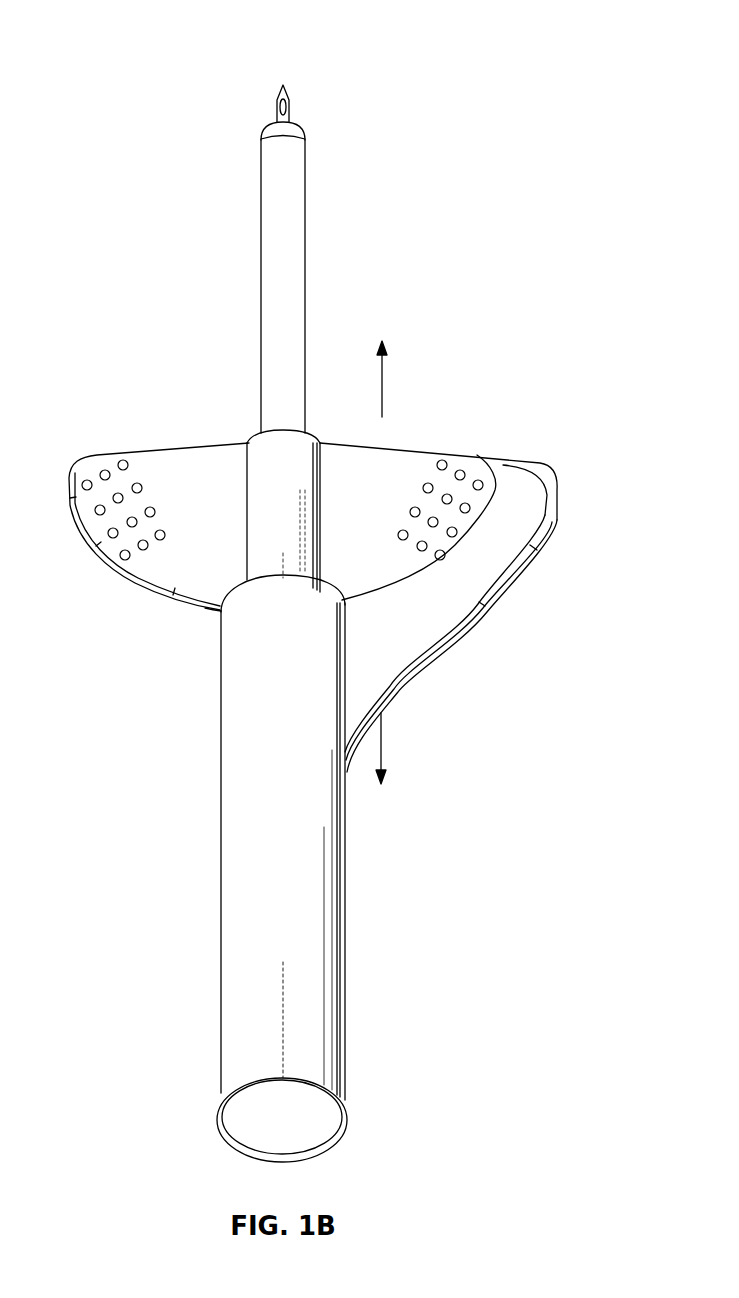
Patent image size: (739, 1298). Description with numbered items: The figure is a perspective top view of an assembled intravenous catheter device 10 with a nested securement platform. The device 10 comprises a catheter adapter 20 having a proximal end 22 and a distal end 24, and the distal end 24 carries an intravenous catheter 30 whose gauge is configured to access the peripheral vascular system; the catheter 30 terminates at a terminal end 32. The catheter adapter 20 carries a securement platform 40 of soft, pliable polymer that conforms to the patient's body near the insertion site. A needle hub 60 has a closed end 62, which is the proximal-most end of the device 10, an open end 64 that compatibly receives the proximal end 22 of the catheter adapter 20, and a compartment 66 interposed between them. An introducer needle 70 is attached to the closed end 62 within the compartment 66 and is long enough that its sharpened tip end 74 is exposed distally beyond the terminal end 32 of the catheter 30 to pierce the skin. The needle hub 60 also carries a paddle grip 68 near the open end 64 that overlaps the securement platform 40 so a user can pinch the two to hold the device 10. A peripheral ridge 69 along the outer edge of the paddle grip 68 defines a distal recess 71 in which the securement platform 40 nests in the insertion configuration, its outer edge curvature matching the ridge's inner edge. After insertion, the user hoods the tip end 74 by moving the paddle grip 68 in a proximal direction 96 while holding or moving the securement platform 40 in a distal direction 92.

The catheter device 10 is at (106, 34).
The catheter adapter 20 is at (255, 443).
The proximal end 22 is at (213, 611).
The distal end 24 is at (288, 430).
The intravenous catheter 30 is at (306, 218).
The terminal end 32 is at (295, 123).
The securement platform 40 is at (70, 470).
The needle hub 60 is at (347, 893).
The closed end 62 is at (335, 1125).
The open end 64 is at (283, 578).
The compartment 66 is at (238, 960).
The paddle grip 68 is at (460, 613).
The peripheral ridge 69 is at (385, 610).
The introducer needle 70 is at (278, 100).
The distal recess 71 is at (505, 467).
The tip end 74 is at (286, 88).
The distal direction 92 is at (388, 383).
The proximal direction 96 is at (383, 742).